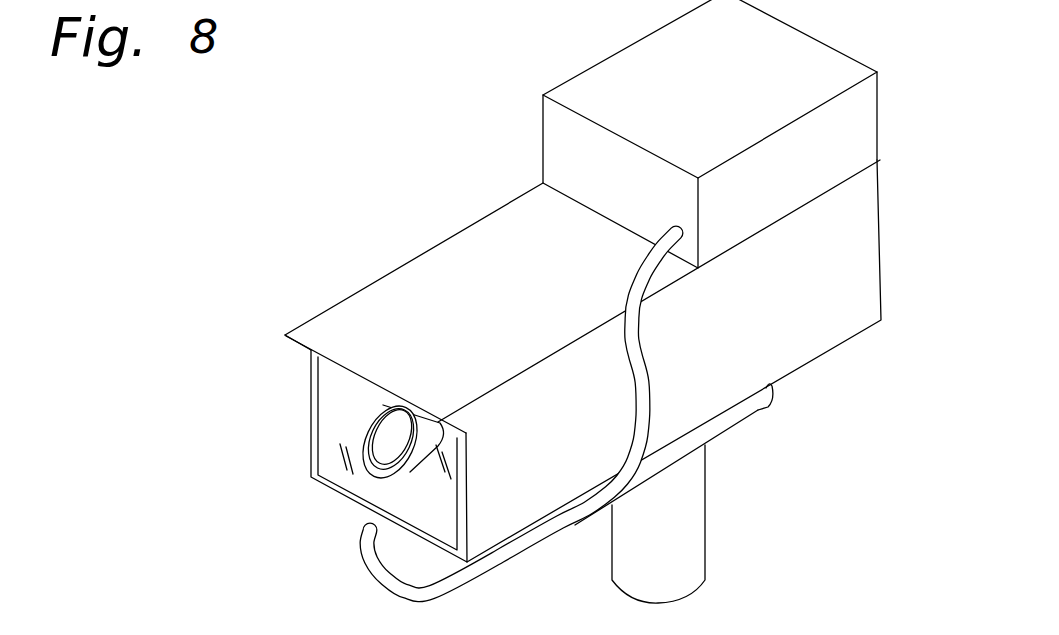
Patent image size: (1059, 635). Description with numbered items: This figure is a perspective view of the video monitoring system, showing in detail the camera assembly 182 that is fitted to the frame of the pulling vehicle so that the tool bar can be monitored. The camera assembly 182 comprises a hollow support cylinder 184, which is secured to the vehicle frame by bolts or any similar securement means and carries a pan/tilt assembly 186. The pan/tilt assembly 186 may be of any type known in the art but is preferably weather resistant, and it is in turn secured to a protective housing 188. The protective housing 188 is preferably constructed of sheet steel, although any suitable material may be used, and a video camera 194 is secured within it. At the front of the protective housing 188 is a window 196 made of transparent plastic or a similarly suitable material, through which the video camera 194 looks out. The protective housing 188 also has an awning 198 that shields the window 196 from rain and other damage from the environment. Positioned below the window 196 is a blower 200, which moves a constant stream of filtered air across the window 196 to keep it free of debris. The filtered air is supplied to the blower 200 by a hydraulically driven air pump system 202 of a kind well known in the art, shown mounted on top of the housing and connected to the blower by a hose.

The camera assembly 182 is at (447, 173).
The hollow support cylinder 184 is at (693, 507).
The pan/tilt assembly 186 is at (758, 410).
The protective housing 188 is at (546, 297).
The video camera 194 is at (362, 437).
The window 196 is at (328, 410).
The awning 198 is at (286, 336).
The blower 200 is at (356, 523).
The hydraulically driven air pump system 202 is at (745, 92).